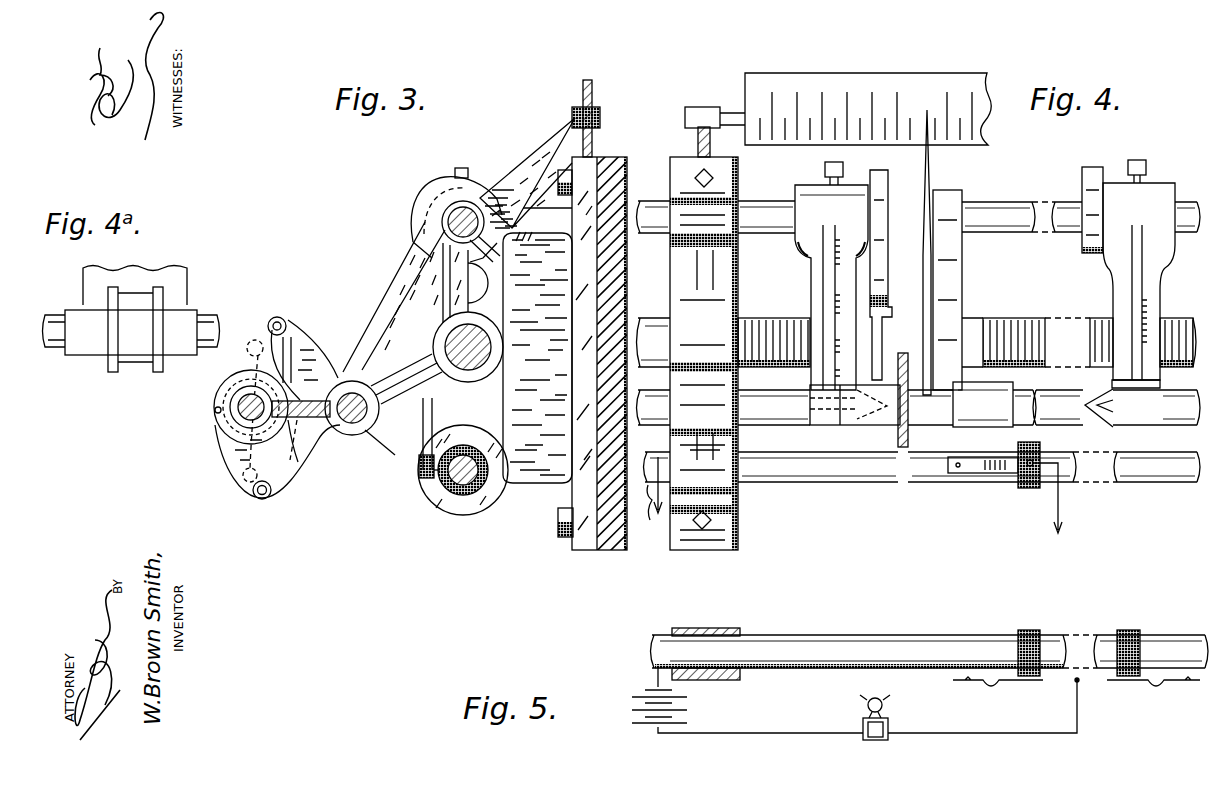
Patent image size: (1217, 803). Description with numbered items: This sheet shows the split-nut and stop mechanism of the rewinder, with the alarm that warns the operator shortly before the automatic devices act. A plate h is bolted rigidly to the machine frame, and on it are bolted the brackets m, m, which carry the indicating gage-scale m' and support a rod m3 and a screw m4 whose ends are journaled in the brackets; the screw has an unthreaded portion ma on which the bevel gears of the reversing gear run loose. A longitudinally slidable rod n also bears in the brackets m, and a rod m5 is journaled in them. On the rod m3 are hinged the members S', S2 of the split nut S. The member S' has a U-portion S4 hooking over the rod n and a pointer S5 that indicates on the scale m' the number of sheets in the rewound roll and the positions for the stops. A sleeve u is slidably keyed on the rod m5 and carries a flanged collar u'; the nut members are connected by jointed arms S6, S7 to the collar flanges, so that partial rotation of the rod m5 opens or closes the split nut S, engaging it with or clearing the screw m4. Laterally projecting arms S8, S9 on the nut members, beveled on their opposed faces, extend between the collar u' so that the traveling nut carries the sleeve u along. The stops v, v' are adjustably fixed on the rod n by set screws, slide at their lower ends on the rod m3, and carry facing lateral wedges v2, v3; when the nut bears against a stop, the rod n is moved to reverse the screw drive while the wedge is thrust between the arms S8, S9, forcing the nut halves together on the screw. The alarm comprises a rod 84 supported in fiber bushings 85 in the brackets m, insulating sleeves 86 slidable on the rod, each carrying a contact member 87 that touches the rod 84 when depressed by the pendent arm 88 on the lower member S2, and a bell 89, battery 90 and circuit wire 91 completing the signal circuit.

In FIG. 3, the plate h is at (634, 136).
In FIG. 3, the indicating gage-scale m' is at (598, 110).
In FIG. 4, the indicating gage-scale m' is at (868, 89).
In FIG. 3, the pointer S5 is at (531, 174).
In FIG. 3, the U-portion S4 is at (442, 222).
In FIG. 3, the screw m4 is at (476, 351).
In FIG. 4, the screw m4 is at (764, 324).
In FIG. 3, the brackets m is at (528, 336).
In FIG. 4, the brackets m is at (718, 344).
In FIG. 4, the unthreaded portion of screw ma is at (660, 320).
In FIG. 3, the stop v is at (394, 297).
In FIG. 4, the stop v is at (831, 276).
In FIG. 4, the stop v' is at (1139, 274).
In FIG. 4, the lateral wedge v2 is at (868, 412).
In FIG. 4, the lateral wedge v3 is at (1103, 405).
In FIG. 3, the pendent arm 88 is at (431, 414).
In FIG. 3, the rod 84 is at (460, 496).
In FIG. 4, the rod 84 is at (1163, 484).
In FIG. 5, the rod 84 is at (825, 643).
In FIG. 3, the fiber bushings 85 is at (443, 491).
In FIG. 4, the fiber bushings 85 is at (738, 516).
In FIG. 5, the fiber bushings 85 is at (703, 632).
In FIG. 4, the insulating sleeves 86 is at (1030, 490).
In FIG. 5, the insulating sleeves 86 is at (1046, 634).
In FIG. 3, the electrical contact member 87 is at (427, 494).
In FIG. 4, the electrical contact member 87 is at (997, 474).
In FIG. 5, the electrical contact member 87 is at (994, 682).
In FIG. 5, the bell 89 is at (862, 708).
In FIG. 5, the battery 90 is at (678, 710).
In FIG. 4, the circuit wire 91 is at (1062, 503).
In FIG. 5, the circuit wire 91 is at (777, 736).
In FIG. 3, the rod m3 is at (355, 419).
In FIG. 4, the rod m3 is at (1070, 412).
In FIG. 3, the rod m5 is at (246, 415).
In FIG. 4A, the rod m5 is at (216, 324).
In FIG. 4, the rod m5 is at (803, 410).
In FIG. 3, the split nut S is at (278, 417).
In FIG. 4, the split nut S is at (986, 252).
In FIG. 3, the split-nut member S' is at (337, 343).
In FIG. 3, the split-nut member S2 is at (377, 433).
In FIG. 3, the jointed arm S6 is at (293, 312).
In FIG. 3, the jointed arm S7 is at (298, 471).
In FIG. 3, the laterally projecting arm S8 is at (250, 436).
In FIG. 4A, the laterally projecting arm S8 is at (186, 278).
In FIG. 3, the laterally projecting arm S9 is at (277, 478).
In FIG. 4A, the sleeve u is at (131, 348).
In FIG. 4, the sleeve u is at (855, 457).
In FIG. 3, the flanged collar u' is at (215, 407).
In FIG. 4A, the flanged collar u' is at (135, 343).
In FIG. 4, the flanged collar u' is at (900, 448).
In FIG. 4, the longitudinally slidable rod n is at (1000, 216).